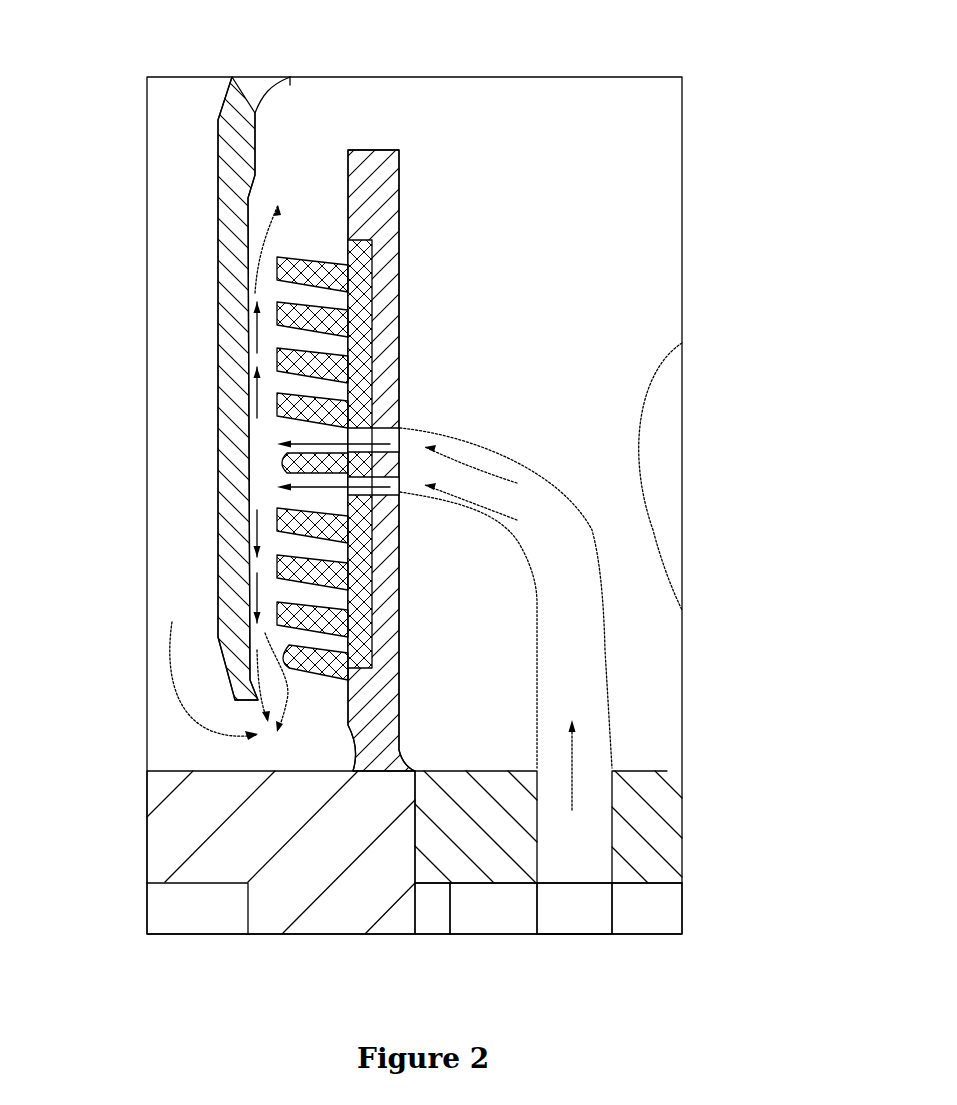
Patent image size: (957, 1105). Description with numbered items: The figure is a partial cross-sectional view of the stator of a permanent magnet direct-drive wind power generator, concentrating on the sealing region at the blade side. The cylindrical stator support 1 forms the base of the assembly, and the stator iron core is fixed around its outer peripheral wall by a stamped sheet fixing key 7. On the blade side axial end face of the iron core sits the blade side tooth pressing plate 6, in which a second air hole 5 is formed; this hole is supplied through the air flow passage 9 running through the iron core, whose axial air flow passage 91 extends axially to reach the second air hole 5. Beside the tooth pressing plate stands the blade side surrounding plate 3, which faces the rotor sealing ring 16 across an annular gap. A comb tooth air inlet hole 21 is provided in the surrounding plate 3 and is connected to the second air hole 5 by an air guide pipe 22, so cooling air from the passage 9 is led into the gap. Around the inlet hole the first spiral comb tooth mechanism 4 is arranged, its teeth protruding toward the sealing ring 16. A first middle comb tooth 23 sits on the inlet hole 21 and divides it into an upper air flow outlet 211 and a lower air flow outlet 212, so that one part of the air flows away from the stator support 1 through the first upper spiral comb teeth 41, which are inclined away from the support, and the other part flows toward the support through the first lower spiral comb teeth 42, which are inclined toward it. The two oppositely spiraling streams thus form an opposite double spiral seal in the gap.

The stator support 1 is at (182, 820).
The blade side surrounding plate 3 is at (373, 165).
The first spiral comb tooth mechanism 4 is at (308, 230).
The second air hole 5 is at (592, 833).
The blade side tooth pressing plate 6 is at (655, 813).
The stamped sheet fixing key 7 is at (440, 912).
The air flow passage 9 is at (590, 923).
The axial air flow passage 91 is at (593, 908).
The rotor sealing ring 16 is at (233, 185).
The comb tooth air inlet hole 21 is at (435, 468).
The air guide pipe 22 is at (623, 660).
The first middle comb tooth 23 is at (395, 472).
The first upper spiral comb teeth 41 is at (370, 277).
The first lower spiral comb teeth 42 is at (400, 599).
The upper air flow outlet 211 is at (400, 428).
The lower air flow outlet 212 is at (400, 492).